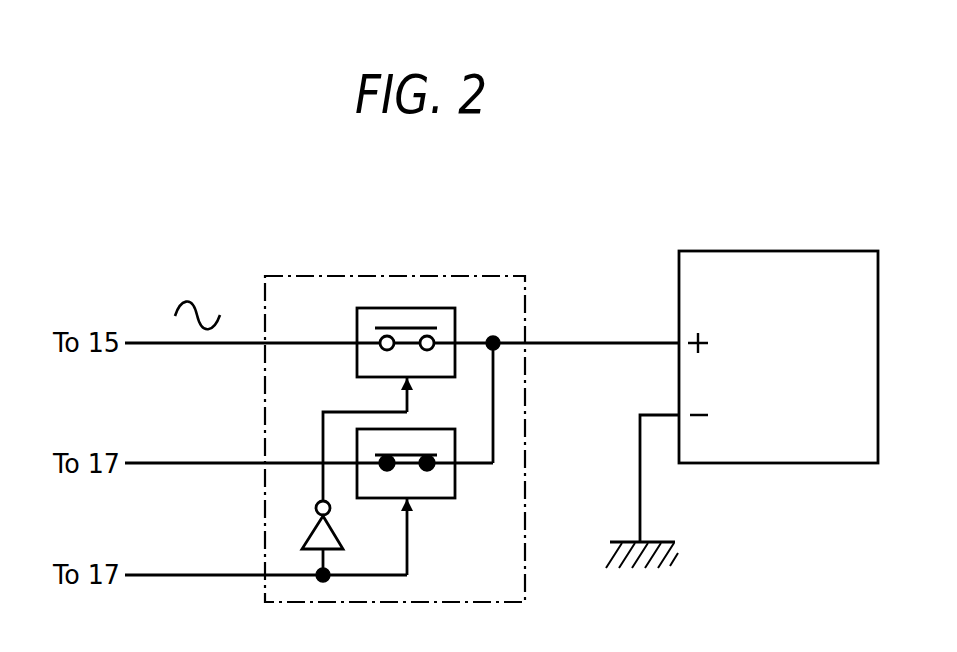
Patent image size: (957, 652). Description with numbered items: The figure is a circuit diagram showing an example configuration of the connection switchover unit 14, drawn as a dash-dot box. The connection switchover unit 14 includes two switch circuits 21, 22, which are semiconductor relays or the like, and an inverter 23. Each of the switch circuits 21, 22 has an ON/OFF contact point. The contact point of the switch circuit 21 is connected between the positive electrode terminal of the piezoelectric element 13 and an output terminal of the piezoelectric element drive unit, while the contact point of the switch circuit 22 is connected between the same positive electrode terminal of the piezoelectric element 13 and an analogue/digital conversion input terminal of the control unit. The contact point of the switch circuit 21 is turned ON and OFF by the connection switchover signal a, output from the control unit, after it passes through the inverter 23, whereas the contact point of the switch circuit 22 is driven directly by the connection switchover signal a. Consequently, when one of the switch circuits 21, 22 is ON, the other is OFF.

The piezoelectric element 13 is at (782, 251).
The connection switchover unit 14 is at (478, 275).
The switch circuit 21 is at (357, 325).
The switch circuit 22 is at (435, 498).
The inverter 23 is at (310, 530).
The connection switchover signal a is at (182, 575).